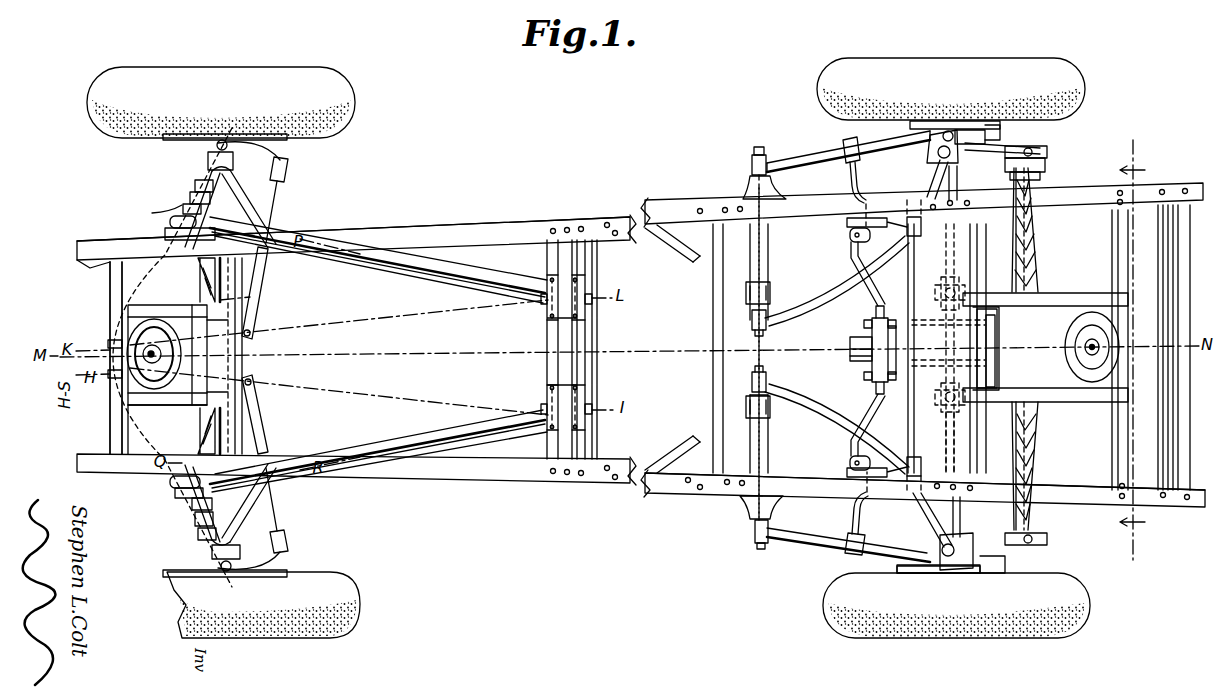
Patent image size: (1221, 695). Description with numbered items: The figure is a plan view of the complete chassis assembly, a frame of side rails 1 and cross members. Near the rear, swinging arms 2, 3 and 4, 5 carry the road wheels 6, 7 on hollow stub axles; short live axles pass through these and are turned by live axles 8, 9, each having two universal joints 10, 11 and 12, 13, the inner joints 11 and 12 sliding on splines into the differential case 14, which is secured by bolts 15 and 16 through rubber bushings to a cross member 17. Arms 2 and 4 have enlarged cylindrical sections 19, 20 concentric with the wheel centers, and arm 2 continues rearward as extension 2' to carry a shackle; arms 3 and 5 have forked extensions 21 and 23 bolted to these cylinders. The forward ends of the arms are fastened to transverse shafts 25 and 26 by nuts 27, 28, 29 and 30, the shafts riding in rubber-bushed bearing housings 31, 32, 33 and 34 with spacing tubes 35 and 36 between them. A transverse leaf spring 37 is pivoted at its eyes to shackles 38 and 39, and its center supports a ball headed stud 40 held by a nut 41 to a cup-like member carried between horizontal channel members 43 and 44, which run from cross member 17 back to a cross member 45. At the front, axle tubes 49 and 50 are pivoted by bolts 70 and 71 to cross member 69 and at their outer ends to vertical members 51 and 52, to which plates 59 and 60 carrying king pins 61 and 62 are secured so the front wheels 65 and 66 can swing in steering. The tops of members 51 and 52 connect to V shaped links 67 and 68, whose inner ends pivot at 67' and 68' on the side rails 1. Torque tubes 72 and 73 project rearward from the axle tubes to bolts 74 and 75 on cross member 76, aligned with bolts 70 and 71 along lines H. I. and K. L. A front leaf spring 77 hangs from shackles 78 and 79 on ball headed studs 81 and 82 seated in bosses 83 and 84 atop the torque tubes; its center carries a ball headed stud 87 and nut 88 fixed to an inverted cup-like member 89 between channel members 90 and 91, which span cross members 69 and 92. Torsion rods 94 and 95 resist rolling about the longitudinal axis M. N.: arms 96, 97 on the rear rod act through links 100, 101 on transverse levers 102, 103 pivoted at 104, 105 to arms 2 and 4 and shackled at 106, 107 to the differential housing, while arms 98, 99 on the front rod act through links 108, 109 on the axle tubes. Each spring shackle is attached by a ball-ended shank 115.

The side rails 1 is at (615, 215).
The swinging arm 2 is at (848, 150).
The extension of swinging arm 2' is at (1014, 137).
The swinging arm 3 is at (845, 304).
The swinging arm 4 is at (800, 558).
The swinging arm 5 is at (845, 392).
The road wheel 6 is at (951, 93).
The road wheel 7 is at (956, 601).
The live axle 8 is at (960, 180).
The live axle 9 is at (961, 507).
The universal joint 10 is at (960, 152).
The universal joint 11 is at (965, 290).
The universal joint 12 is at (965, 408).
The universal joint 13 is at (960, 545).
The differential case 14 is at (998, 340).
The bolt 15 is at (985, 310).
The bolt 16 is at (992, 362).
The cross member 17 is at (949, 418).
The enlarged cylindrical section 19 is at (930, 150).
The enlarged cylindrical section 20 is at (945, 566).
The forked extension 21 is at (935, 530).
The forked extension 23 is at (937, 167).
The transverse shaft 25 is at (768, 250).
The transverse shaft 26 is at (768, 440).
The nut 27 is at (758, 147).
The nut 28 is at (772, 330).
The nut 29 is at (772, 370).
The nut 30 is at (760, 552).
The bearing housing 31 is at (772, 190).
The bearing housing 32 is at (770, 296).
The bearing housing 33 is at (770, 410).
The bearing housing 34 is at (785, 508).
The spacing tube 35 is at (770, 266).
The spacing tube 36 is at (770, 456).
The transverse laminated leaf spring 37 is at (1038, 258).
The shackle 38 is at (1046, 166).
The shackle 39 is at (1038, 532).
The ball headed stud 40 is at (1090, 346).
The nut 41 is at (992, 568).
The horizontal channel member 43 is at (1080, 400).
The horizontal channel member 44 is at (1078, 293).
The cross member 45 is at (1112, 243).
The front axle tube 49 is at (150, 242).
The front axle tube 50 is at (150, 450).
The vertical member 51 is at (218, 552).
The vertical member 52 is at (208, 158).
The plate 59 is at (240, 546).
The plate 60 is at (234, 160).
The king pin 61 is at (228, 572).
The king pin 62 is at (220, 138).
The front wheel 65 is at (263, 605).
The front wheel 66 is at (221, 102).
The V shaped link 67 is at (230, 504).
The bearings of link 67 67' is at (268, 414).
The V shaped link 68 is at (230, 208).
The bearings of link 68 68' is at (268, 293).
The cross member 69 is at (112, 284).
The bolt 70 is at (108, 378).
The bolt 71 is at (112, 340).
The torque tube 72 is at (290, 232).
The torque tube 73 is at (300, 478).
The bolt 74 is at (590, 410).
The bolt 75 is at (590, 297).
The cross member 76 is at (572, 349).
The transverse leaf spring 77 is at (200, 276).
The shackle 78 is at (183, 209).
The shackle 79 is at (195, 500).
The ball headed stud 81 is at (190, 196).
The ball headed stud 82 is at (196, 520).
The boss 83 is at (200, 538).
The boss 84 is at (198, 185).
The ball headed stud 87 is at (148, 352).
The nut 88 is at (150, 340).
The inverted cup-like member 89 is at (195, 390).
The horizontal channel member 90 is at (178, 306).
The horizontal channel member 91 is at (162, 398).
The cross member 92 is at (225, 330).
The torsion rod 94 is at (884, 304).
The torsion rod 95 is at (256, 298).
The arm 96 is at (906, 226).
The arm 97 is at (906, 478).
The arm 98 is at (152, 212).
The arm 99 is at (175, 494).
The link 100 is at (858, 262).
The link 101 is at (868, 460).
The transverse lever 102 is at (860, 240).
The transverse lever 103 is at (855, 448).
The pivotal connection 104 is at (850, 146).
The pivotal connection 105 is at (850, 552).
The swinging shackle 106 is at (866, 326).
The swinging shackle 107 is at (866, 372).
The link 108 is at (170, 222).
The link 109 is at (170, 483).
The shank 115 is at (1048, 152).